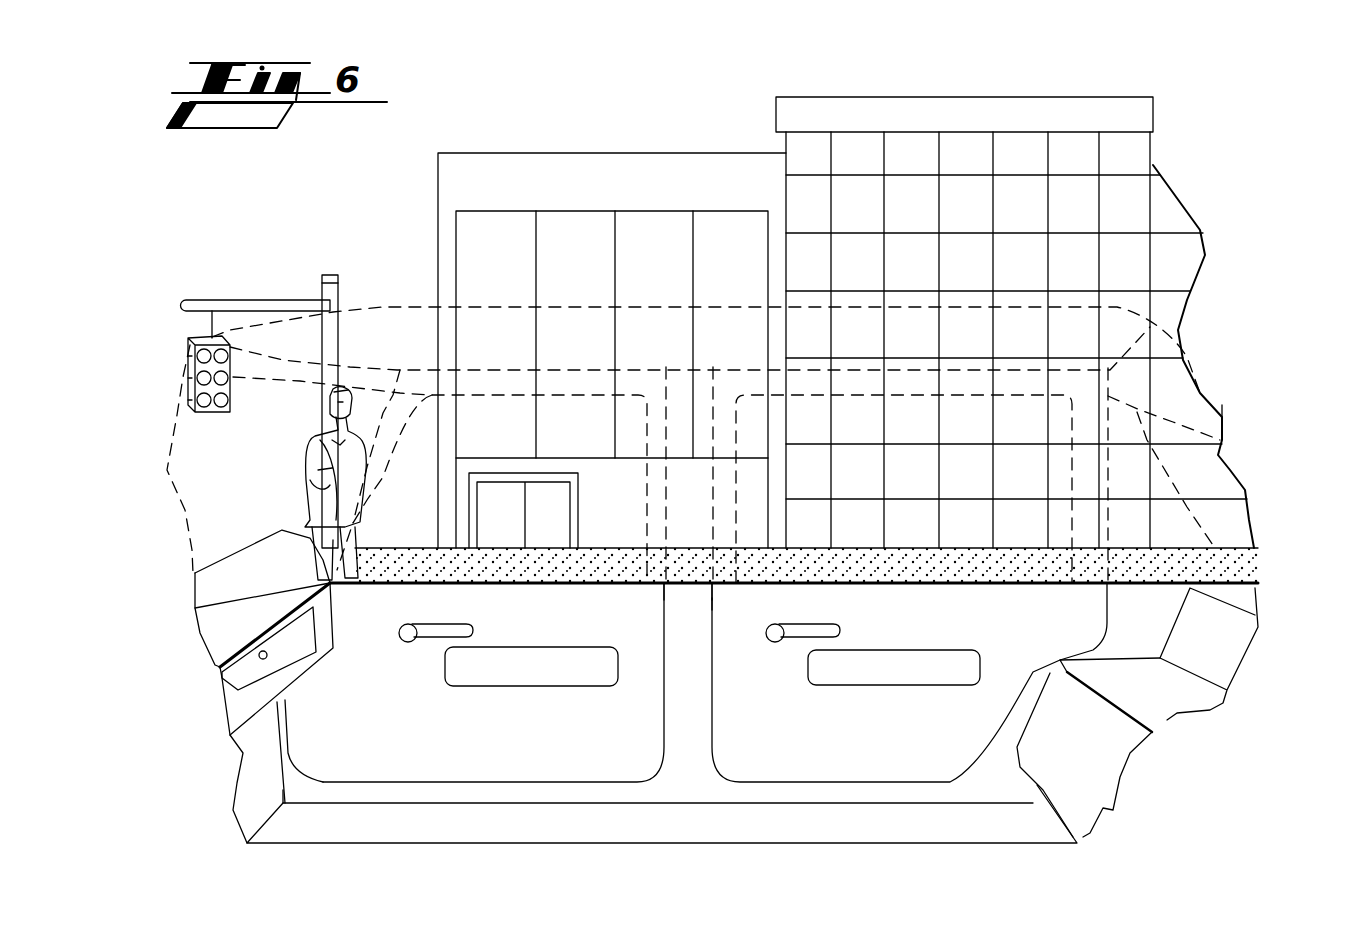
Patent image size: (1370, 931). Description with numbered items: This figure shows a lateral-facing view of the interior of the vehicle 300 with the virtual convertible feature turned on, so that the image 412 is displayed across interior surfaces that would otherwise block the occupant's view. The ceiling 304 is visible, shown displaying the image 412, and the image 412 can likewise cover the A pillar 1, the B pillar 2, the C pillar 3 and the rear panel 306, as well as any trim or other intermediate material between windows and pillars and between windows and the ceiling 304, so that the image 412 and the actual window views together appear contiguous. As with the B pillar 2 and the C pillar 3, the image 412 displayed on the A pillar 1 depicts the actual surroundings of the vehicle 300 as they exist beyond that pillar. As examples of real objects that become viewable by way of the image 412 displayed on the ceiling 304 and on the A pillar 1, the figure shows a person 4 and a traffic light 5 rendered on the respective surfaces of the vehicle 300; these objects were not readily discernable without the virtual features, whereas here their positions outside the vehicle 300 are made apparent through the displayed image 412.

The A pillar 1 is at (394, 476).
The B pillar 2 is at (654, 607).
The C pillar 3 is at (1142, 612).
The person 4 is at (302, 440).
The traffic light 5 is at (276, 296).
The vehicle 300 is at (720, 834).
The ceiling 304 is at (383, 307).
The rear panel 306 is at (1170, 423).
The image 412 is at (722, 598).